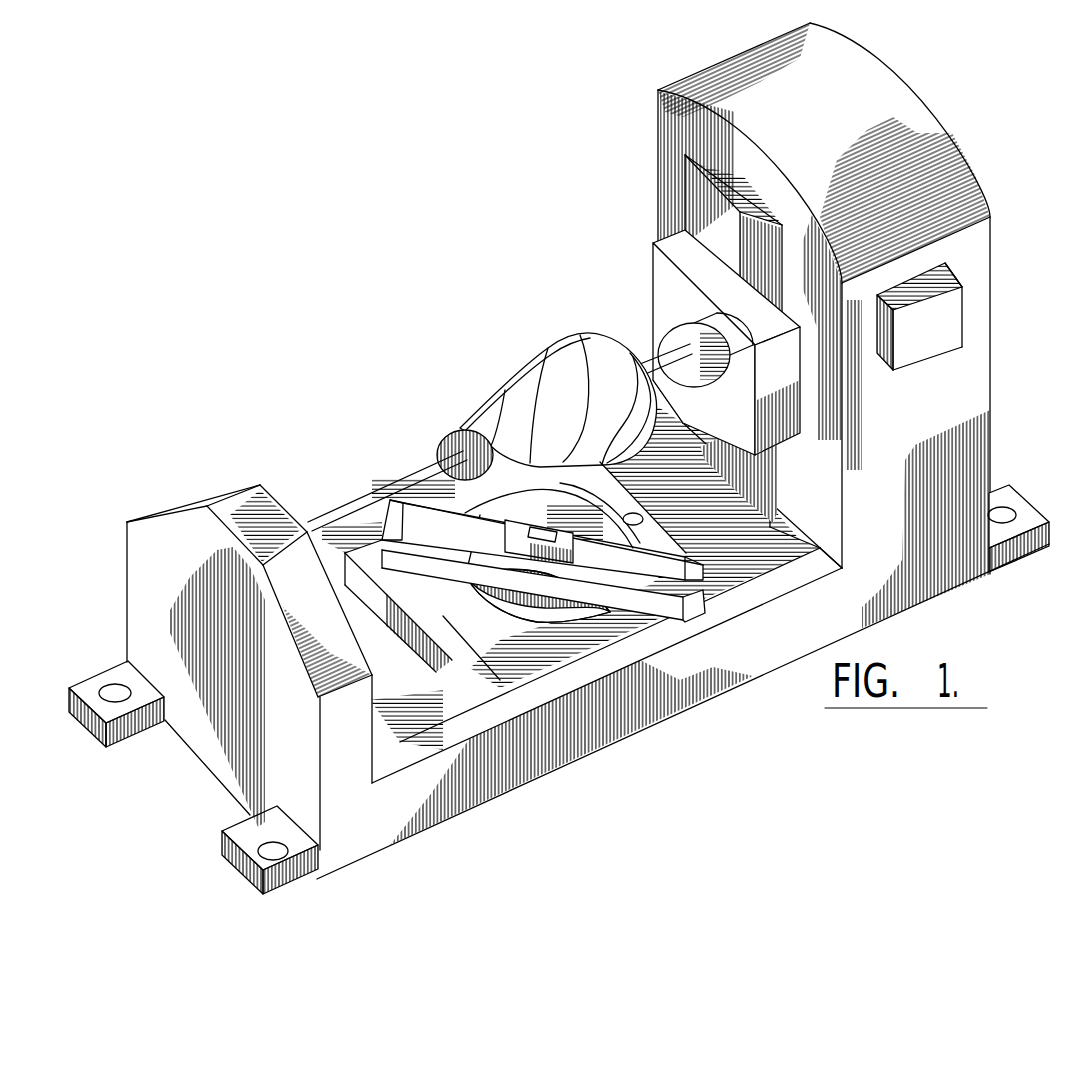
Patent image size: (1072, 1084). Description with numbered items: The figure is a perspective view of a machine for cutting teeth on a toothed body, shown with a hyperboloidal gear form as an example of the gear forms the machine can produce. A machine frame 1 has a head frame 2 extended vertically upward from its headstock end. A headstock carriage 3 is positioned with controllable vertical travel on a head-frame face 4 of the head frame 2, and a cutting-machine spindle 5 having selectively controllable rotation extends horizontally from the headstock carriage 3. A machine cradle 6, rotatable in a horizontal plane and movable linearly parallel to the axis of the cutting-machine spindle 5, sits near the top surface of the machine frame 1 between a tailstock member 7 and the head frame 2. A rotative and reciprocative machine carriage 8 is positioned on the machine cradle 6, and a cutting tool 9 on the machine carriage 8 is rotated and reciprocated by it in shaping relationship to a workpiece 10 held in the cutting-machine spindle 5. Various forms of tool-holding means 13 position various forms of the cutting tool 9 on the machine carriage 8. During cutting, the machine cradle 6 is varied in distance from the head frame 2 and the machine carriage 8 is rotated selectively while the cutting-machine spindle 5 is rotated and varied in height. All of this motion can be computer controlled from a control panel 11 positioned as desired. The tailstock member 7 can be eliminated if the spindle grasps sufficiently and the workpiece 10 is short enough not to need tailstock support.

The machine frame 1 is at (559, 555).
The head frame 2 is at (992, 388).
The headstock carriage 3 is at (770, 354).
The head-frame face 4 is at (822, 492).
The cutting-machine spindle 5 is at (690, 320).
The machine cradle 6 is at (530, 616).
The tailstock member 7 is at (223, 490).
The rotative and reciprocative machine carriage 8 is at (420, 528).
The cutting tool 9 is at (545, 527).
The workpiece 10 is at (540, 347).
The control panel 11 is at (940, 332).
The tool-holding means 13 is at (467, 430).